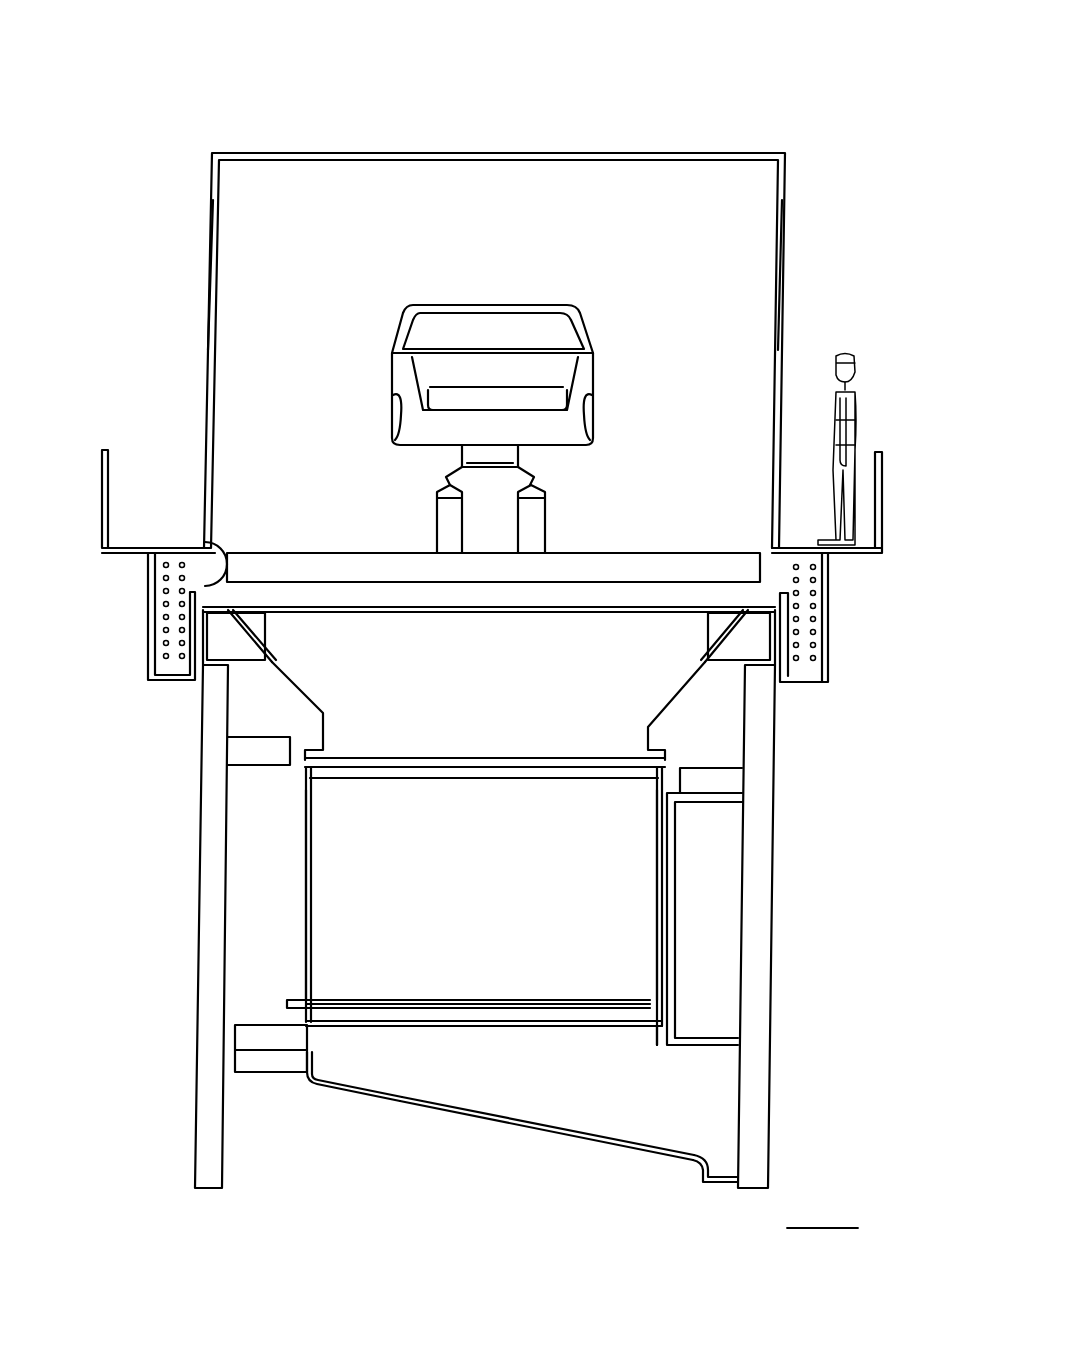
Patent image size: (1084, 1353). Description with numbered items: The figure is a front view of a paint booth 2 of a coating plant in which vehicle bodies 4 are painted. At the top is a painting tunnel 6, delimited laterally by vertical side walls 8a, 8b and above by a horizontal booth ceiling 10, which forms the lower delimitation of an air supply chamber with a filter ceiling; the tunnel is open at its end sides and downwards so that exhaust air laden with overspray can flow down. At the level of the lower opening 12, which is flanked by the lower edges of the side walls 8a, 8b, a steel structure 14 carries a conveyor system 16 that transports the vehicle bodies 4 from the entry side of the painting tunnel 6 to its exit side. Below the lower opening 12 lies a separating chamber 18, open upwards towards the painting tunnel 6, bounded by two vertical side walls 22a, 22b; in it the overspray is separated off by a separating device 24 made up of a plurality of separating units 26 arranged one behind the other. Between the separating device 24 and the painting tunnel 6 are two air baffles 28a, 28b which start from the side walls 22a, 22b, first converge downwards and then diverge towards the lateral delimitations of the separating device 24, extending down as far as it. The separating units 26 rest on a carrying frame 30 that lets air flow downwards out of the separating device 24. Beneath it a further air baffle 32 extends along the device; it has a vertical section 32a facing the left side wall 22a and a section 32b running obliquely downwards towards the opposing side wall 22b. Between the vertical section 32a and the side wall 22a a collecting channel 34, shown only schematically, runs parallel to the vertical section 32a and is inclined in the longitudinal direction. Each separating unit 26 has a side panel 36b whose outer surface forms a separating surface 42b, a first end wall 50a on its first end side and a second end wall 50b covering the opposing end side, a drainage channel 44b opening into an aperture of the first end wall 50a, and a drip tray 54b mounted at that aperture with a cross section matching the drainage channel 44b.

The paint booth 2 is at (818, 97).
The vehicle body 4 is at (585, 326).
The painting tunnel 6 is at (520, 263).
The side wall 8a is at (207, 267).
The side wall 8b is at (781, 258).
The booth ceiling 10 is at (680, 152).
The lower opening 12 is at (222, 582).
The steel structure 14 is at (702, 570).
The conveyor system 16 is at (528, 526).
The separating chamber 18 is at (503, 698).
The side wall 22a is at (196, 938).
The side wall 22b is at (777, 890).
The separating device 24 is at (670, 832).
The separating unit 26 is at (330, 874).
The air baffle 28a is at (302, 674).
The air baffle 28b is at (690, 678).
The carrying frame 30 is at (647, 1015).
The air baffle 32 is at (431, 1112).
The vertical section 32a is at (318, 1062).
The oblique section 32b is at (604, 1128).
The collecting channel 34 is at (243, 1042).
The side panel 36b is at (322, 820).
The separating surface 42b is at (408, 815).
The drainage channel 44b is at (465, 1000).
The first end wall 50a is at (308, 900).
The second end wall 50b is at (658, 950).
The drip tray 54b is at (285, 1000).